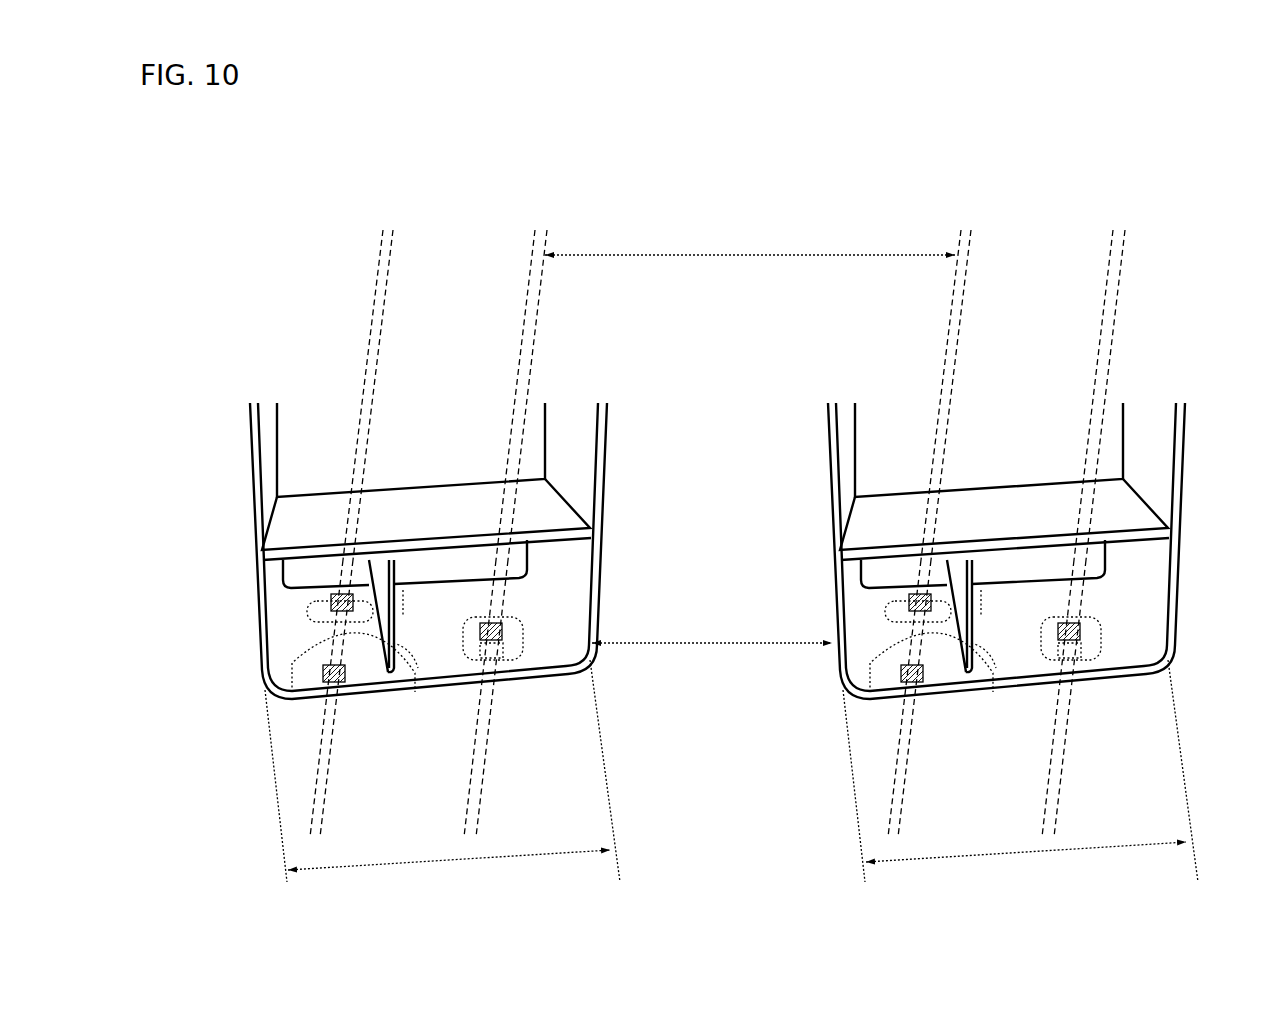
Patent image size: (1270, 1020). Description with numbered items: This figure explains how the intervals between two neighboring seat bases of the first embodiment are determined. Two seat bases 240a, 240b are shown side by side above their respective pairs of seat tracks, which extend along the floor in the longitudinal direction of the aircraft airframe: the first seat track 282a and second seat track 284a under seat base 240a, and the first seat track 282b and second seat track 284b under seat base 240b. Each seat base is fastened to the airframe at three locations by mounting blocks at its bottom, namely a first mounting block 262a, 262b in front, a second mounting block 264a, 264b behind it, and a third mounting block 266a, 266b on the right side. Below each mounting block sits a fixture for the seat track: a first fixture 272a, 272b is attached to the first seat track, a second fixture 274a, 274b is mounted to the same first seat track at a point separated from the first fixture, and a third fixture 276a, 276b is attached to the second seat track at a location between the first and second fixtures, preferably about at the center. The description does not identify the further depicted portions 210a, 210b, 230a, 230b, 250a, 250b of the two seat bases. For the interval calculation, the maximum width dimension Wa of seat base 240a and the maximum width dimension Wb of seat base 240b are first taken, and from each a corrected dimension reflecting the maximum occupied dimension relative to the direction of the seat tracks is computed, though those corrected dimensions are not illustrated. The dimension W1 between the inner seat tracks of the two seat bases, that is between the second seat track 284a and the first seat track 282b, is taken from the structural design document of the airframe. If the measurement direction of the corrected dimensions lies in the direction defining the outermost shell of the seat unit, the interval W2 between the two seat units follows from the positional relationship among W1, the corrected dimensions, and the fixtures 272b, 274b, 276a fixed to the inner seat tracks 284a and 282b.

The first container body 210a is at (608, 433).
The second container body 210b is at (1236, 425).
The first side wall 230a is at (251, 442).
The second side wall 230b is at (830, 444).
The seat base 240a is at (596, 618).
The seat base 240b is at (1174, 632).
The first partition plate 250a is at (395, 678).
The second partition plate 250b is at (973, 678).
The first mounting block 262a is at (330, 598).
The first mounting block 262b is at (905, 598).
The second mounting block 264a is at (292, 664).
The second mounting block 264b is at (870, 663).
The third mounting block 266a is at (513, 620).
The third mounting block 266b is at (1091, 620).
The first fixture 272a is at (262, 582).
The first fixture 272b is at (833, 582).
The second fixture 274a is at (337, 693).
The second fixture 274b is at (917, 693).
The third fixture 276a is at (513, 677).
The third fixture 276b is at (1091, 677).
The first seat track 282a is at (370, 400).
The first seat track 282b is at (948, 400).
The second seat track 284a is at (522, 383).
The second seat track 284b is at (1100, 383).
The dimension between inner seat tracks W1 is at (750, 241).
The interval between seat units W2 is at (712, 658).
The maximum width dimension Wa is at (442, 774).
The maximum width dimension Wb is at (1020, 771).